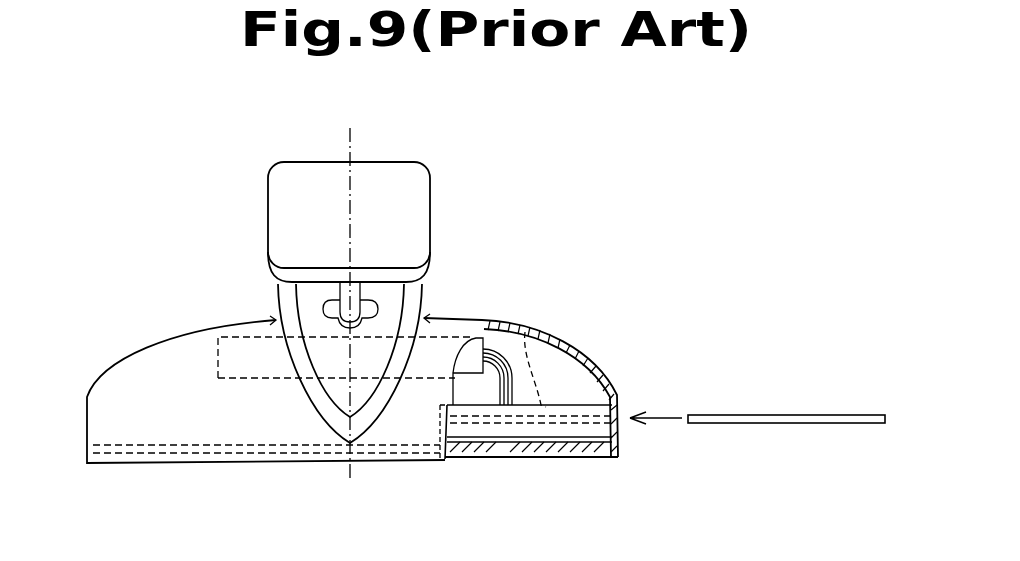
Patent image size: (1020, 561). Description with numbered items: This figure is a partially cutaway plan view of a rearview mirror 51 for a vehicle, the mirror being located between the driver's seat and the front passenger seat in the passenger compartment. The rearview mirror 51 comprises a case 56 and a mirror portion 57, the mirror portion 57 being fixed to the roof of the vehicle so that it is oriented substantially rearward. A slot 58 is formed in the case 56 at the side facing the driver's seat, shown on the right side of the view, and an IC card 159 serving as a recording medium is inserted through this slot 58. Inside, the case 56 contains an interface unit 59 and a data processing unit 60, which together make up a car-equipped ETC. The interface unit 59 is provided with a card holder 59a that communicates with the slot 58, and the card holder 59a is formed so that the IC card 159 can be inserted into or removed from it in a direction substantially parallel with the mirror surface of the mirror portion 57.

The rearview mirror 51 is at (552, 225).
The case 56 is at (471, 332).
The mirror portion 57 is at (498, 450).
The slot 58 is at (621, 418).
The interface unit 59 is at (573, 406).
The card holder 59a is at (532, 351).
The data processing unit 60 is at (245, 380).
The IC card 159 is at (785, 415).